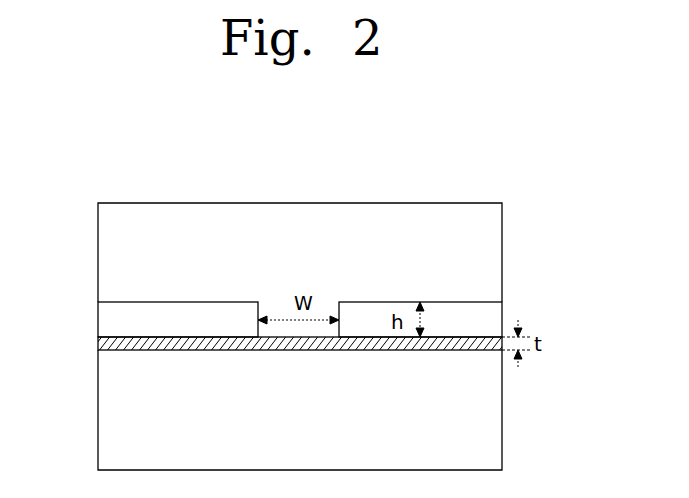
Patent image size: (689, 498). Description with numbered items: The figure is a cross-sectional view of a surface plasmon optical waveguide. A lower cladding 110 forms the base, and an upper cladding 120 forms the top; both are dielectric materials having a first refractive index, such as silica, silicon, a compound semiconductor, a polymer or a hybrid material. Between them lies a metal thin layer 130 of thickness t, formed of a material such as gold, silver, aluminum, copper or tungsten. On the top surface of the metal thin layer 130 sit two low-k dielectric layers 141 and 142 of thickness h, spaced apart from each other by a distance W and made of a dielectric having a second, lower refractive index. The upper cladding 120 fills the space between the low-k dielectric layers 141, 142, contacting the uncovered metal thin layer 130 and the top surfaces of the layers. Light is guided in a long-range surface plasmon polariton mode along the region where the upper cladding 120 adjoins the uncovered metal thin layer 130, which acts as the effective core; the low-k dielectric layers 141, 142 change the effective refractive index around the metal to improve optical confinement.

The lower cladding 110 is at (490, 418).
The upper cladding 120 is at (490, 252).
The metal thin layer 130 is at (105, 343).
The low-k dielectric layer 141 is at (113, 320).
The low-k dielectric layer 142 is at (493, 310).